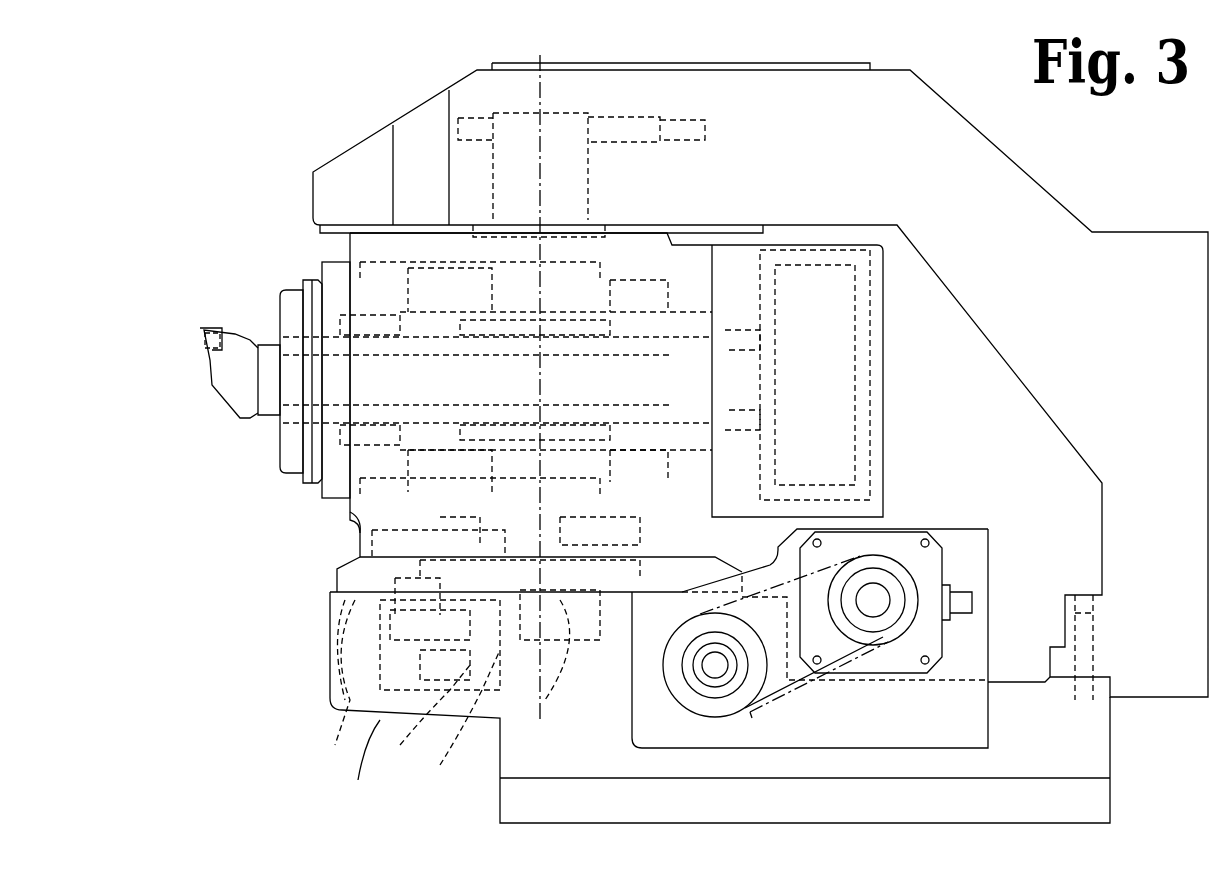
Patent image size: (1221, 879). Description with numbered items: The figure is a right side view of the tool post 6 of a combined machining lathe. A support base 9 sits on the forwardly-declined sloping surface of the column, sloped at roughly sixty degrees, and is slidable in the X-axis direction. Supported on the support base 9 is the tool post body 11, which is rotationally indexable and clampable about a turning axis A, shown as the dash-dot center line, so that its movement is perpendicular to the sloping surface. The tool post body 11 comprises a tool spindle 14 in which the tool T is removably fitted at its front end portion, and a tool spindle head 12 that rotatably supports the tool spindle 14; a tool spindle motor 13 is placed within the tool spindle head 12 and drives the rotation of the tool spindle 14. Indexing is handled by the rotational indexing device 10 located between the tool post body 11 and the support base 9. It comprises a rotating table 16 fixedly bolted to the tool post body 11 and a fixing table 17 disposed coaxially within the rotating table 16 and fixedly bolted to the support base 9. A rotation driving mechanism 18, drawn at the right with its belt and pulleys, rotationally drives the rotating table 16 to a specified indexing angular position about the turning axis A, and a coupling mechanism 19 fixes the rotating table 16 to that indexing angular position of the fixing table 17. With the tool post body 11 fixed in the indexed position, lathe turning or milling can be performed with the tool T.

The tool post 6 is at (288, 156).
The tool spindle motor 13 is at (408, 303).
The tool spindle 14 is at (322, 290).
The tool spindle head 12 is at (320, 492).
The tool post body 11 is at (353, 537).
The rotational indexing device 10 is at (320, 628).
The rotation driving mechanism 18 is at (948, 567).
The rotating table 16 is at (331, 687).
The support base 9 is at (361, 765).
The coupling mechanism 19 is at (421, 721).
The fixing table 17 is at (456, 723).
The tool T is at (212, 392).
The turning axis A is at (540, 678).